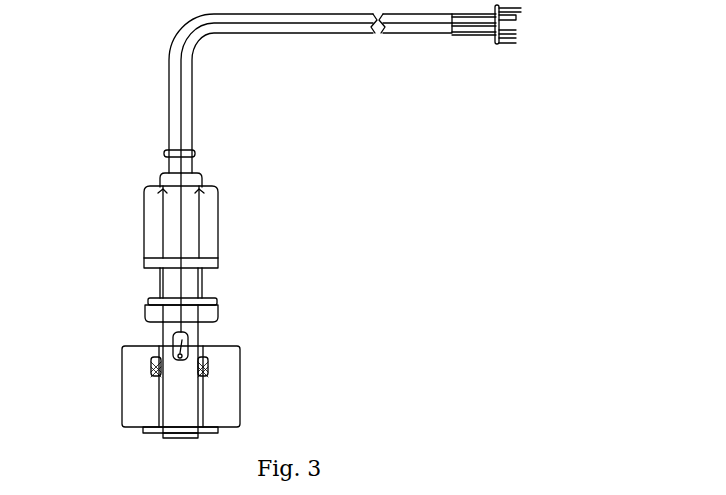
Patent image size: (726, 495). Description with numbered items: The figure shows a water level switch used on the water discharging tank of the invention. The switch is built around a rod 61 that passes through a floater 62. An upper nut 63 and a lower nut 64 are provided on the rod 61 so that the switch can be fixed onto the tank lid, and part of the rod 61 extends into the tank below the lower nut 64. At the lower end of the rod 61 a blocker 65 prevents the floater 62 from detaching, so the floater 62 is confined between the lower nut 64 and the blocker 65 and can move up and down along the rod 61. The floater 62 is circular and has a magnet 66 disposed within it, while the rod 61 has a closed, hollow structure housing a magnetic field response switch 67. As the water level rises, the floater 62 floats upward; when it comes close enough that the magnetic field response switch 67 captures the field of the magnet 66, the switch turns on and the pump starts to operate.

The rod 61 is at (180, 413).
The floater 62 is at (231, 382).
The upper nut 63 is at (208, 230).
The lower nut 64 is at (208, 305).
The blocker 65 is at (223, 422).
The magnet 66 is at (205, 363).
The magnetic field response switch 67 is at (190, 353).